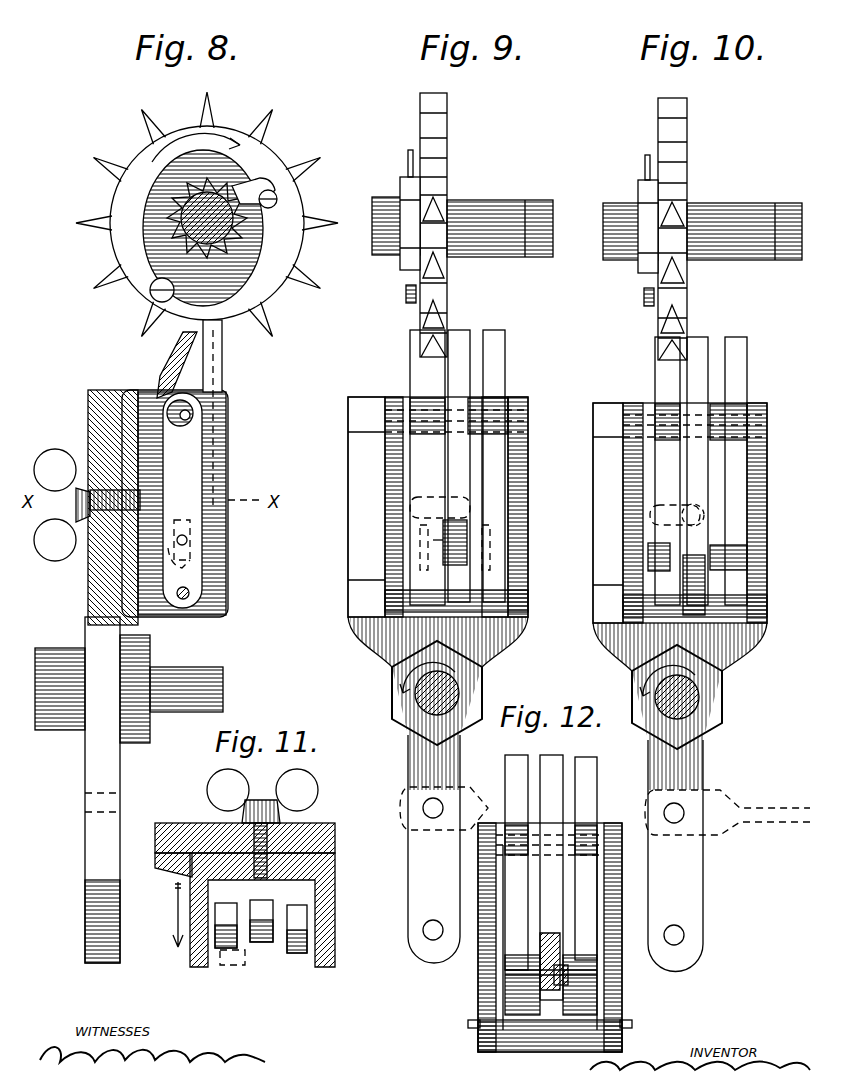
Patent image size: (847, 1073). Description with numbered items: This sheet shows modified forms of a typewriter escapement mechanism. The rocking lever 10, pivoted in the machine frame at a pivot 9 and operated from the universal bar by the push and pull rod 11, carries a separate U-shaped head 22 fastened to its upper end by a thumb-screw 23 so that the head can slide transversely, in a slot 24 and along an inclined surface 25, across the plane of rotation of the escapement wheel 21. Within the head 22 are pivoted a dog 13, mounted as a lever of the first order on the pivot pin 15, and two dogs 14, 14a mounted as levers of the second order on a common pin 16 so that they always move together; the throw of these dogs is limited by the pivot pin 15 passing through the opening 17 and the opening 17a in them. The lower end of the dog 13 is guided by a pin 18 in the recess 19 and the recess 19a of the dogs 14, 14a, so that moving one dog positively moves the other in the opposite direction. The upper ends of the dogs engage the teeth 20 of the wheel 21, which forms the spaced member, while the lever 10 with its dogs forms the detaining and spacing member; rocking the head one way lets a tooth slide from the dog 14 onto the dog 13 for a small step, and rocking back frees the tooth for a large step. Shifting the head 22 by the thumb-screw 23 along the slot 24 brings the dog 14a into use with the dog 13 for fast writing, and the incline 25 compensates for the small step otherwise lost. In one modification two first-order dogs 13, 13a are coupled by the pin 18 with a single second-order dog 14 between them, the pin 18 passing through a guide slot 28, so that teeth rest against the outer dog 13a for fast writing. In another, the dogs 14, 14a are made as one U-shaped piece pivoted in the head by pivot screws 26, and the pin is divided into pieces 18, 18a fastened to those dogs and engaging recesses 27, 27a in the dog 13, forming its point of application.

In FIG. 8, the pivot 9 is at (192, 680).
In FIG. 9, the pivot 9 is at (495, 672).
In FIG. 10, the pivot 9 is at (725, 692).
In FIG. 8, the rocking lever 10 is at (90, 770).
In FIG. 9, the rocking lever 10 is at (425, 768).
In FIG. 10, the rocking lever 10 is at (695, 780).
In FIG. 11, the rocking lever 10 is at (320, 825).
In FIG. 9, the push and pull rod 11 is at (462, 790).
In FIG. 10, the push and pull rod 11 is at (760, 822).
In FIG. 8, the dog 13 is at (176, 366).
In FIG. 9, the dog 13 is at (442, 380).
In FIG. 10, the dog 13 is at (745, 383).
In FIG. 11, the dog 13 is at (263, 943).
In FIG. 12, the dog 13 is at (560, 760).
In FIG. 10, the dog 13a is at (645, 320).
In FIG. 8, the dog 14 is at (212, 372).
In FIG. 9, the dog 14 is at (414, 355).
In FIG. 10, the dog 14 is at (700, 360).
In FIG. 11, the dog 14 is at (218, 950).
In FIG. 12, the dog 14 is at (518, 760).
In FIG. 9, the dog 14a is at (492, 363).
In FIG. 11, the dog 14a is at (298, 955).
In FIG. 12, the dog 14a is at (606, 856).
In FIG. 8, the pivot pin 15 is at (232, 398).
In FIG. 9, the pivot pin 15 is at (528, 415).
In FIG. 10, the pivot pin 15 is at (768, 430).
In FIG. 8, the pin 16 is at (218, 585).
In FIG. 9, the pin 16 is at (462, 595).
In FIG. 10, the pin 16 is at (735, 598).
In FIG. 8, the opening 17 is at (198, 415).
In FIG. 9, the opening 17 is at (410, 410).
In FIG. 10, the opening 17 is at (695, 412).
In FIG. 9, the opening 17a is at (505, 395).
In FIG. 8, the pin 18 is at (190, 540).
In FIG. 9, the pin 18 is at (470, 540).
In FIG. 10, the pin 18 is at (712, 552).
In FIG. 12, the pin 18 is at (520, 975).
In FIG. 12, the pin piece 18a is at (568, 975).
In FIG. 8, the recess 19 is at (212, 556).
In FIG. 9, the recess 19 is at (420, 535).
In FIG. 9, the recess 19a is at (470, 548).
In FIG. 8, the teeth 20 is at (270, 314).
In FIG. 9, the teeth 20 is at (450, 297).
In FIG. 10, the teeth 20 is at (688, 298).
In FIG. 11, the teeth 20 is at (236, 965).
In FIG. 8, the escapement wheel 21 is at (256, 152).
In FIG. 9, the escapement wheel 21 is at (437, 170).
In FIG. 10, the escapement wheel 21 is at (677, 147).
In FIG. 8, the U-shaped head 22 is at (230, 600).
In FIG. 9, the U-shaped head 22 is at (525, 458).
In FIG. 10, the U-shaped head 22 is at (765, 477).
In FIG. 11, the U-shaped head 22 is at (335, 865).
In FIG. 12, the U-shaped head 22 is at (612, 930).
In FIG. 10, the thumb-screw 23 is at (700, 512).
In FIG. 11, the thumb-screw 23 is at (305, 780).
In FIG. 10, the slot 24 is at (676, 510).
In FIG. 11, the slot 24 is at (248, 825).
In FIG. 11, the inclined surface 25 is at (176, 880).
In FIG. 12, the pivot screws 26 is at (470, 1028).
In FIG. 12, the recess 27 is at (540, 990).
In FIG. 12, the recess 27a is at (565, 992).
In FIG. 10, the guide slot 28 is at (695, 572).